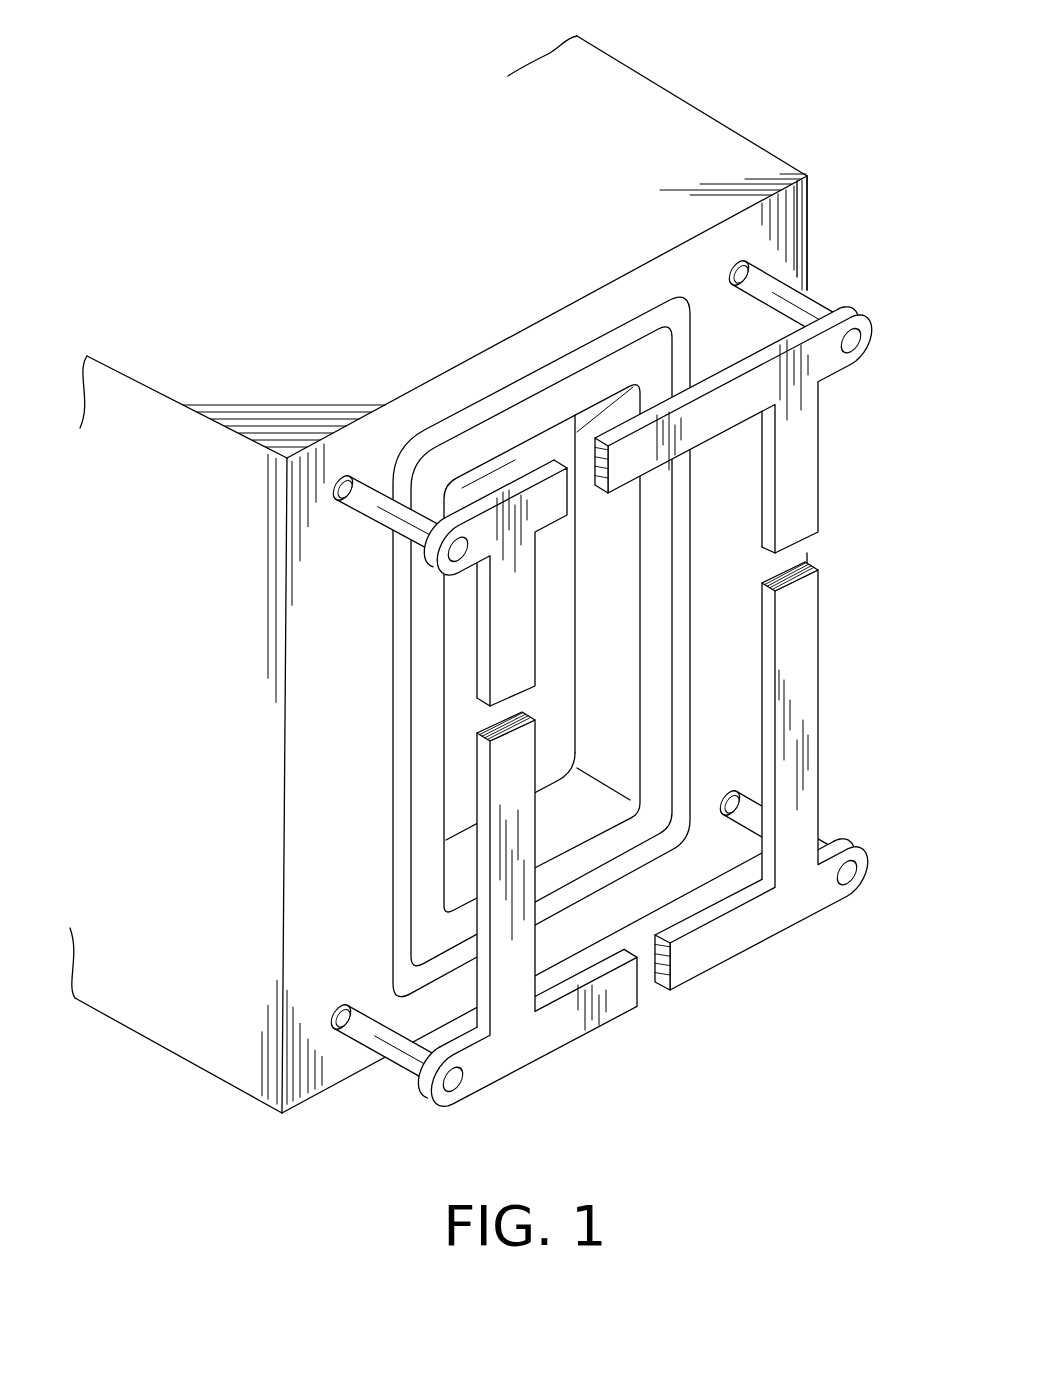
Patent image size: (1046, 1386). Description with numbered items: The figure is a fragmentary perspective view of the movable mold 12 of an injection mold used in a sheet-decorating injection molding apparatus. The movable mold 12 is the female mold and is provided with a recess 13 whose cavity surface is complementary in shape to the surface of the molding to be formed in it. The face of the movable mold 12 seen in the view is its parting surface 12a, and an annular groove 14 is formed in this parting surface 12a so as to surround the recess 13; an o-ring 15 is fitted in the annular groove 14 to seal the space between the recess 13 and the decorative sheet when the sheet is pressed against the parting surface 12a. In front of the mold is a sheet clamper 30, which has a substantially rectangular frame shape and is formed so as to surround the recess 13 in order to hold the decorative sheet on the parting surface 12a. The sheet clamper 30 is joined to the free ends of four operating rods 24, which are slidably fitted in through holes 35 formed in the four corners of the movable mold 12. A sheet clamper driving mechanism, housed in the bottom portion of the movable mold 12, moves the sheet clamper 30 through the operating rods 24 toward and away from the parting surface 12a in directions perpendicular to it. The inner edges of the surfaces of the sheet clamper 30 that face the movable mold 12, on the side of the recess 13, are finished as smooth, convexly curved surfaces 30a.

The movable mold 12 is at (625, 115).
The parting surface 12a is at (808, 218).
The recess 13 is at (613, 548).
The annular groove 14 is at (542, 378).
The o-ring 15 is at (633, 333).
The operating rod 24 is at (380, 507).
The sheet clamper 30 is at (803, 468).
The convexly curved surface 30a is at (757, 583).
The through hole 35 is at (349, 474).